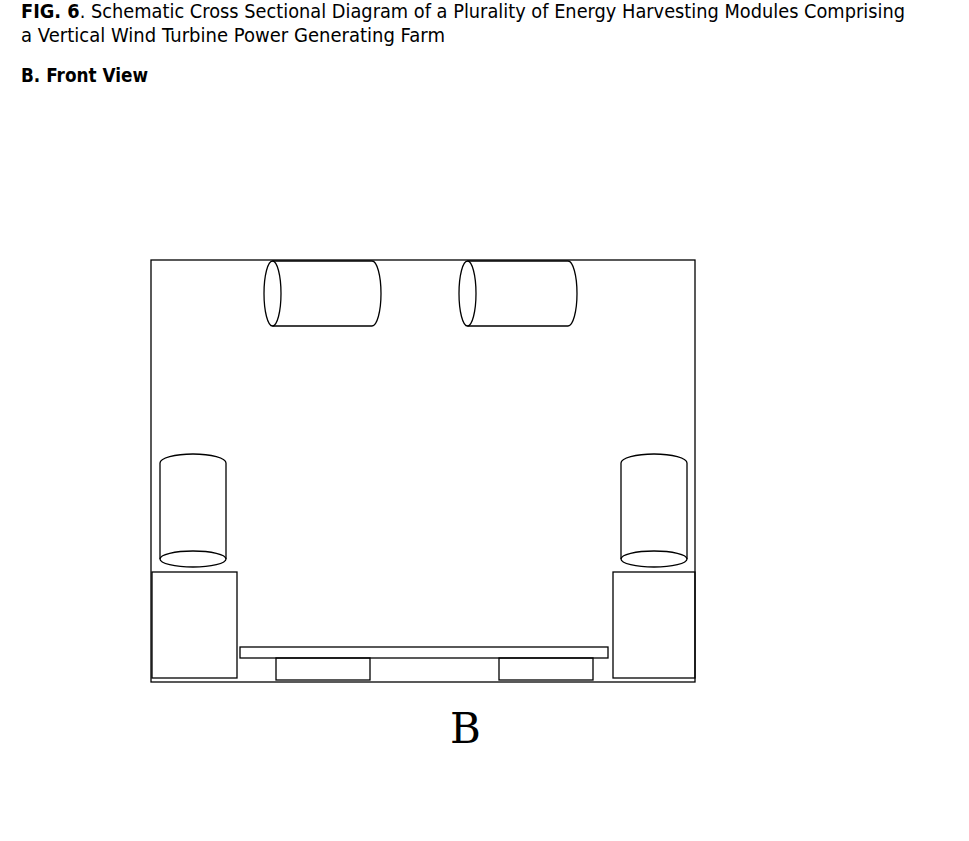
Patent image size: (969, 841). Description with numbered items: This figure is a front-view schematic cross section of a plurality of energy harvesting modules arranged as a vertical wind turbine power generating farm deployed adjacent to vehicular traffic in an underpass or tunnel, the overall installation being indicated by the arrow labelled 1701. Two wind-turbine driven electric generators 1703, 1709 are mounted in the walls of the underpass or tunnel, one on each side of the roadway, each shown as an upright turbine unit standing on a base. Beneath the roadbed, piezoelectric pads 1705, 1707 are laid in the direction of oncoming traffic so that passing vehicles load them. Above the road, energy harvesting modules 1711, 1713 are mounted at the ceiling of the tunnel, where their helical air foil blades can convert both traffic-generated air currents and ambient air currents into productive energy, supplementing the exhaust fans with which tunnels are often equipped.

The energy harvesting module enclosure 1701 is at (587, 251).
The wind-turbine driven electric generator 1703 is at (653, 454).
The piezoelectric pad 1705 is at (547, 658).
The piezoelectric pad 1707 is at (323, 668).
The wind-turbine driven electric generator 1709 is at (193, 454).
The energy harvesting module 1711 is at (327, 260).
The energy harvesting module 1713 is at (521, 260).